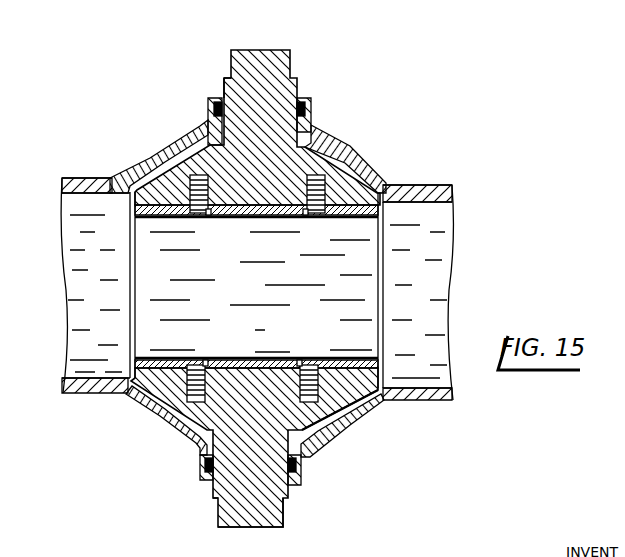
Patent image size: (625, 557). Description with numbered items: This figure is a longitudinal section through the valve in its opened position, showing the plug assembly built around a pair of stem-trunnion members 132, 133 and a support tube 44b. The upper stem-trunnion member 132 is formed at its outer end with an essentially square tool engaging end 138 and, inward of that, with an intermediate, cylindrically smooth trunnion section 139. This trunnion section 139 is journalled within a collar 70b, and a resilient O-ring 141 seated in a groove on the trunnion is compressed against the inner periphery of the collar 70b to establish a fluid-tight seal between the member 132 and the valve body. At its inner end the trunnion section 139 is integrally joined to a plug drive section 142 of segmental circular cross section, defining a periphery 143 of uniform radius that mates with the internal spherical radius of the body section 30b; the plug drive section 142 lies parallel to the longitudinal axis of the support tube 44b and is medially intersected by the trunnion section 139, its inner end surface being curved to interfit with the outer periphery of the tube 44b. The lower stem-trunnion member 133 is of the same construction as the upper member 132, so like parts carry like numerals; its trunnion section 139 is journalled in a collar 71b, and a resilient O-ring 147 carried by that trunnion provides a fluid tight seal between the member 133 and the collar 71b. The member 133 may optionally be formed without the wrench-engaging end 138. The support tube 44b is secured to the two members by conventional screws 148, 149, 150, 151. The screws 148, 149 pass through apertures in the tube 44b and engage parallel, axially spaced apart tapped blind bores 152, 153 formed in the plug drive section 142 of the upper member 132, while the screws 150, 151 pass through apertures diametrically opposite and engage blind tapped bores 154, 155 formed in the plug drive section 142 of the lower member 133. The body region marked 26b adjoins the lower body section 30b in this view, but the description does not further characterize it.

The stem-trunnion member 132 is at (291, 50).
The stem-trunnion member 133 is at (284, 528).
The tool engaging end 138 is at (219, 528).
The trunnion section 139 is at (223, 100).
The O-ring 141 is at (218, 100).
The collar 70b is at (312, 112).
The plug drive section 142 is at (346, 166).
The periphery 143 is at (178, 155).
The support tube 44b is at (258, 216).
The screw 148 is at (192, 212).
The screw 149 is at (318, 210).
The tapped blind bore 152 is at (209, 210).
The tapped blind bore 153 is at (305, 210).
The screw 150 is at (192, 362).
The screw 151 is at (311, 364).
The blind tapped bore 154 is at (200, 364).
The blind tapped bore 155 is at (303, 364).
The O-ring 147 is at (209, 463).
The collar 71b is at (306, 465).
The lower housing edge 26b is at (366, 402).
The body section 30b is at (357, 427).